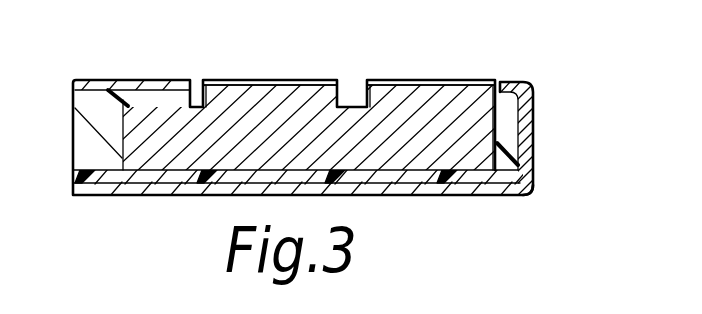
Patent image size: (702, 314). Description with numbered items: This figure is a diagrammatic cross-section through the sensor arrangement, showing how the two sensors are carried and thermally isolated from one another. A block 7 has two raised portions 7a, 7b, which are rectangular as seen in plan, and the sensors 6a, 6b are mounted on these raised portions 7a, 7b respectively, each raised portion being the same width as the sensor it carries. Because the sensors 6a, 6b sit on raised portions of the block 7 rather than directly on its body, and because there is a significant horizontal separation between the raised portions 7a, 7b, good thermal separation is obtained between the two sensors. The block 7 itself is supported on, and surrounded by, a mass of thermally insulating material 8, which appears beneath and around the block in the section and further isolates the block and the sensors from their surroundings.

The sensor 6a is at (402, 82).
The sensor 6b is at (301, 85).
The raised portion 7a is at (467, 97).
The raised portion 7b is at (245, 92).
The block 7 is at (515, 114).
The thermally insulating material 8 is at (462, 184).